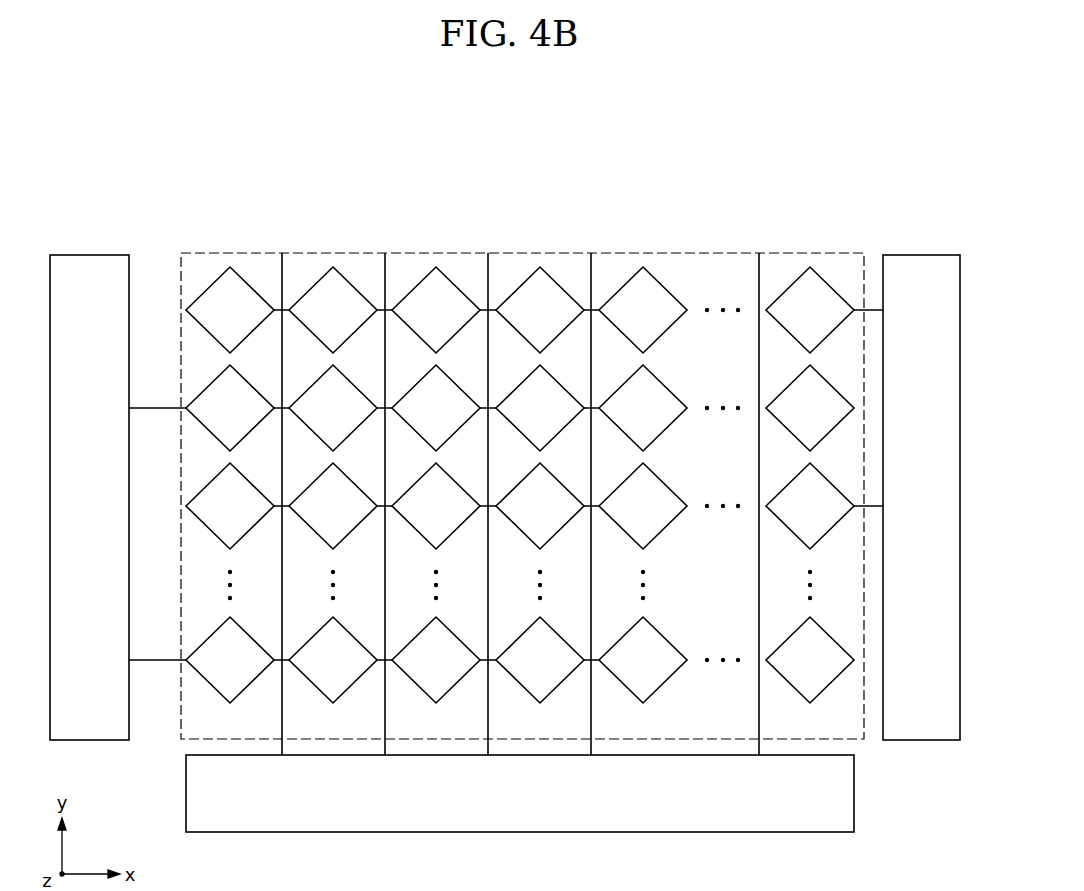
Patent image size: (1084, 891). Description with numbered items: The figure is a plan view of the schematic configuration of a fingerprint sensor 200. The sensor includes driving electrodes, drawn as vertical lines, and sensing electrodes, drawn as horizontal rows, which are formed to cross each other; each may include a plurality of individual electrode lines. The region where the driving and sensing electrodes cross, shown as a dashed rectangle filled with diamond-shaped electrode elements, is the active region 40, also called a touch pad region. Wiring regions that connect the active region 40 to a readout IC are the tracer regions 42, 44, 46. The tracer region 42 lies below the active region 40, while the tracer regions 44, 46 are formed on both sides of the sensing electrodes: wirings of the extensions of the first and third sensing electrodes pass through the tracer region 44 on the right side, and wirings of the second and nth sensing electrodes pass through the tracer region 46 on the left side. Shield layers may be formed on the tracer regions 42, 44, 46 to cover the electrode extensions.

The fingerprint sensor 200 is at (853, 174).
The active region 40 is at (684, 253).
The tracer region 42 is at (855, 795).
The tracer region 44 is at (921, 255).
The tracer region 46 is at (90, 255).